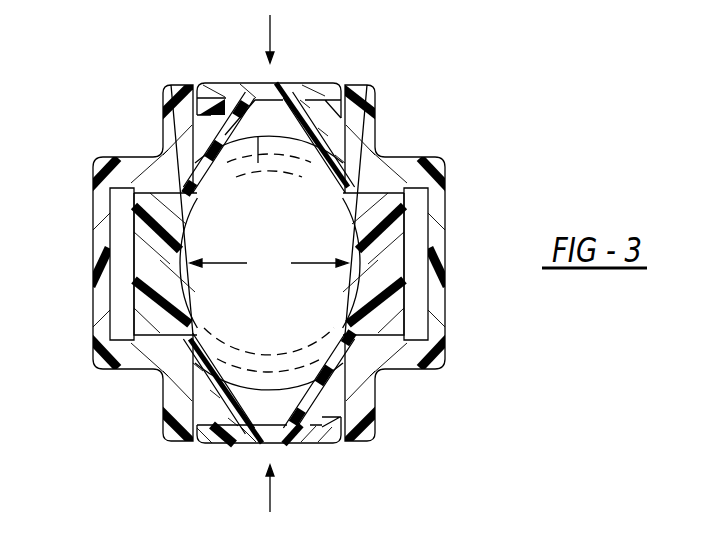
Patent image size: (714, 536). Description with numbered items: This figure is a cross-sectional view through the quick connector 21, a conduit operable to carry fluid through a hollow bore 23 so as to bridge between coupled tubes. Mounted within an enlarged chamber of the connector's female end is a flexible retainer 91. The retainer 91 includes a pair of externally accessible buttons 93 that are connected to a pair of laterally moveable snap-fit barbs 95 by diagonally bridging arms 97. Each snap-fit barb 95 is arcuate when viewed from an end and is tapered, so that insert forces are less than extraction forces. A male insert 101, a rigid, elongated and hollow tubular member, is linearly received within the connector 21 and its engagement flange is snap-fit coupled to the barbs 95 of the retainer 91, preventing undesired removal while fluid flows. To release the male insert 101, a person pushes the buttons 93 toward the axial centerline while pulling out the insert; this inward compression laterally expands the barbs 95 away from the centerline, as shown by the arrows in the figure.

The quick connector 21 is at (124, 95).
The hollow bore 23 is at (302, 214).
The flexible retainer 91 is at (310, 87).
The buttons 93 is at (318, 445).
The snap-fit barbs 95 is at (150, 233).
The diagonally bridging arms 97 is at (212, 137).
The male insert 101 is at (250, 98).